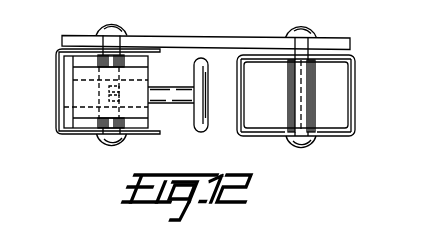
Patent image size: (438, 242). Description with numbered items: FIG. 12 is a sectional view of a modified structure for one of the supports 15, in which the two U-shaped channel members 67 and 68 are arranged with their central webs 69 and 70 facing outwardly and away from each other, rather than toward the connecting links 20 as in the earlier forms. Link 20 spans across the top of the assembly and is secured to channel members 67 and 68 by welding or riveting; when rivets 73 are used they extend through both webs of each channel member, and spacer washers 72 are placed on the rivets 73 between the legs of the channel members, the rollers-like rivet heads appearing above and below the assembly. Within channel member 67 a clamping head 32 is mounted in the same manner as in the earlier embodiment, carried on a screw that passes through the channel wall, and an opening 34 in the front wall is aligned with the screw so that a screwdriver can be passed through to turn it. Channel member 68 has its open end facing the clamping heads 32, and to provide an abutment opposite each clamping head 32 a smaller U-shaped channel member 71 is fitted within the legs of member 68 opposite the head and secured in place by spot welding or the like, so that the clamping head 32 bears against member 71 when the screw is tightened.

The support 15 is at (357, 74).
The connecting link 20 is at (207, 36).
The clamping head 32 is at (204, 101).
The opening 34 is at (56, 94).
The U-shaped channel member 67 is at (88, 140).
The U-shaped channel member 68 is at (344, 142).
The central web 69 is at (54, 62).
The central web 70 is at (355, 99).
The U-shaped channel member 71 is at (245, 99).
The spacer washer 72 is at (126, 63).
The rivet 73 is at (100, 28).